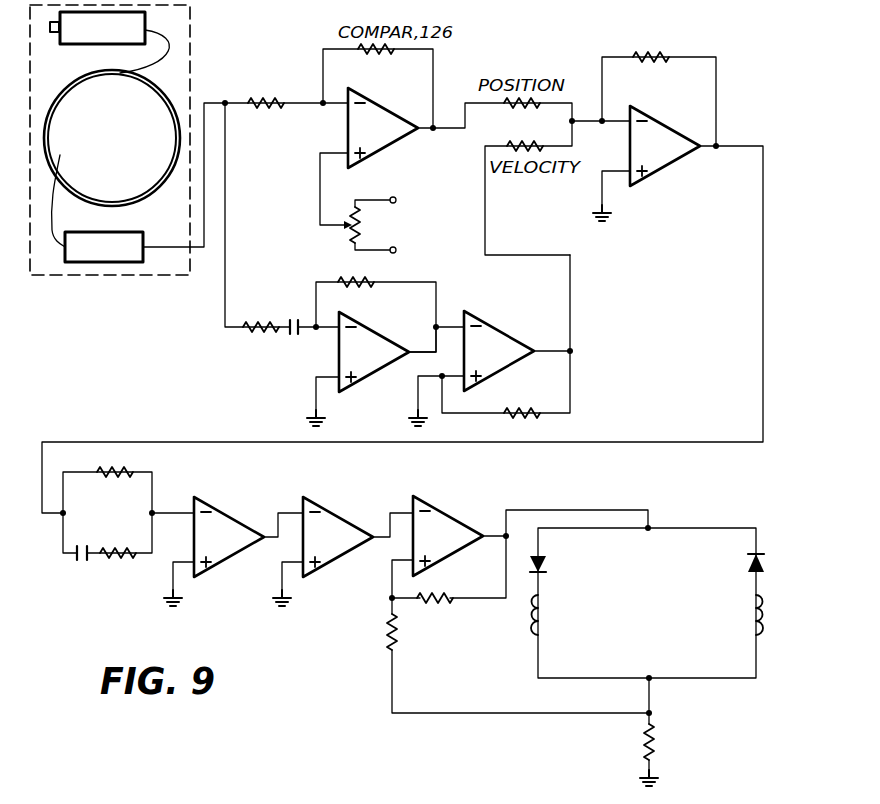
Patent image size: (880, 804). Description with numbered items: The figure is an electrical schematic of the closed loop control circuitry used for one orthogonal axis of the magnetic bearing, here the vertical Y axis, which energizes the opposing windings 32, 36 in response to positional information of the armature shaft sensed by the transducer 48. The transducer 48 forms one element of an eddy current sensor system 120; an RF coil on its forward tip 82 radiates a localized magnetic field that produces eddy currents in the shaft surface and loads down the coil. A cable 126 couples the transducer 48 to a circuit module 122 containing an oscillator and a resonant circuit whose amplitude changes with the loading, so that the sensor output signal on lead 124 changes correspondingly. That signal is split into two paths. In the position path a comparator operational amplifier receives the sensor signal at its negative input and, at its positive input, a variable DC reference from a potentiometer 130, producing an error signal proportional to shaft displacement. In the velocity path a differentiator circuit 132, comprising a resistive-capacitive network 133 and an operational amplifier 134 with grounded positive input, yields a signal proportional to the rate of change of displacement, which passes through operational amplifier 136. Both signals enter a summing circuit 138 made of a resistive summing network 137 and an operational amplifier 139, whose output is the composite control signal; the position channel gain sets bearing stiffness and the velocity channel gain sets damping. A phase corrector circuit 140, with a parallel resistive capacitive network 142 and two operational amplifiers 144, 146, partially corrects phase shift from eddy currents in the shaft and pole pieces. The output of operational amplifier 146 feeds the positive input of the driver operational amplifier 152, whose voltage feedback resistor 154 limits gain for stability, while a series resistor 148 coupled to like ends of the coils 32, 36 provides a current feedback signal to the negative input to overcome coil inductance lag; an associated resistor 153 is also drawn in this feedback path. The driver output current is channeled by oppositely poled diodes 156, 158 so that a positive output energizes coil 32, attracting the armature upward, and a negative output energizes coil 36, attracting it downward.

The eddy current sensor system 120 is at (45, 268).
The transducer 48 is at (135, 22).
The forward tip 82 is at (54, 33).
The cable 126 is at (50, 128).
The circuit module 122 is at (130, 246).
The lead 124 is at (160, 250).
The potentiometer 130 is at (370, 228).
The resistive summing network 137 is at (532, 131).
The summing circuit 138 is at (659, 84).
The operational amplifier 139 is at (672, 150).
The resistive-capacitive network 133 is at (307, 301).
The differentiator circuit 132 is at (376, 314).
The operational amplifier 134 is at (356, 380).
The operational amplifier 136 is at (505, 338).
The phase corrector circuit 140 is at (258, 467).
The parallel resistive capacitive network 142 is at (125, 516).
The operational amplifier 144 is at (218, 556).
The operational amplifier 146 is at (340, 512).
The operational amplifier 152 is at (450, 540).
The feedback resistor 153 is at (385, 632).
The resistor 154 is at (438, 605).
The diode 156 is at (547, 563).
The coil winding 32 is at (548, 618).
The diode 158 is at (745, 563).
The coil winding 36 is at (748, 610).
The series resistor 148 is at (660, 742).